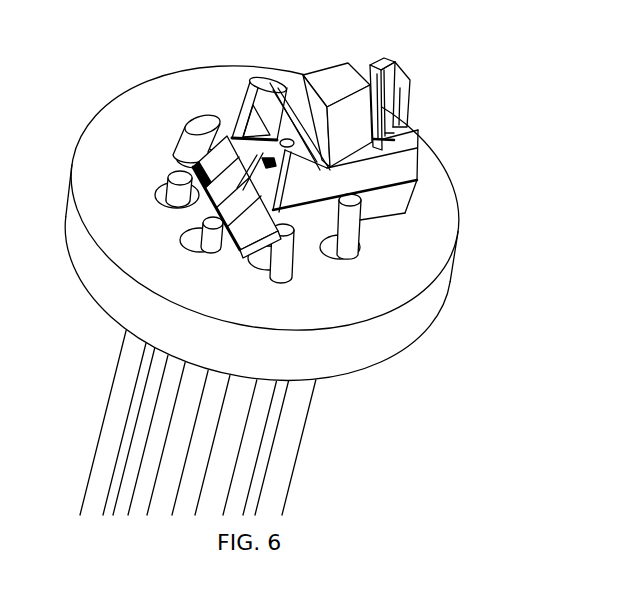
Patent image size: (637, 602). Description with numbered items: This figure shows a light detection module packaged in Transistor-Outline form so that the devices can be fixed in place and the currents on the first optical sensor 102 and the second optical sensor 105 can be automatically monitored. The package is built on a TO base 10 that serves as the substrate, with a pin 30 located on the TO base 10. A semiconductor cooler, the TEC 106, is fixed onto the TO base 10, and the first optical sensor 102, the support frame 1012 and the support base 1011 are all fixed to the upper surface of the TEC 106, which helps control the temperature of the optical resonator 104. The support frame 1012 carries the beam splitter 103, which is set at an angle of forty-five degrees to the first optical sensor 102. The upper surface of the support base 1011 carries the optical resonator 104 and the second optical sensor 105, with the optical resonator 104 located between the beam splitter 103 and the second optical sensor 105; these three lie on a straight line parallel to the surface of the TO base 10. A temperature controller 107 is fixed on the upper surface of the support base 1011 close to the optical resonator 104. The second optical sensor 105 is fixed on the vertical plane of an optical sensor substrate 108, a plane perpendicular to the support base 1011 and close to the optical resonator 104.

The TO base 10 is at (357, 350).
The pin 30 is at (287, 437).
The first optical sensor 102 is at (270, 160).
The support frame 1012 is at (248, 125).
The beam splitter 103 is at (277, 87).
The optical resonator 104 is at (340, 83).
The second optical sensor 105 is at (373, 85).
The semiconductor cooler (TEC) 106 is at (388, 200).
The temperature controller 107 is at (393, 142).
The optical sensor substrate 108 is at (403, 107).
The support base 1011 is at (398, 167).